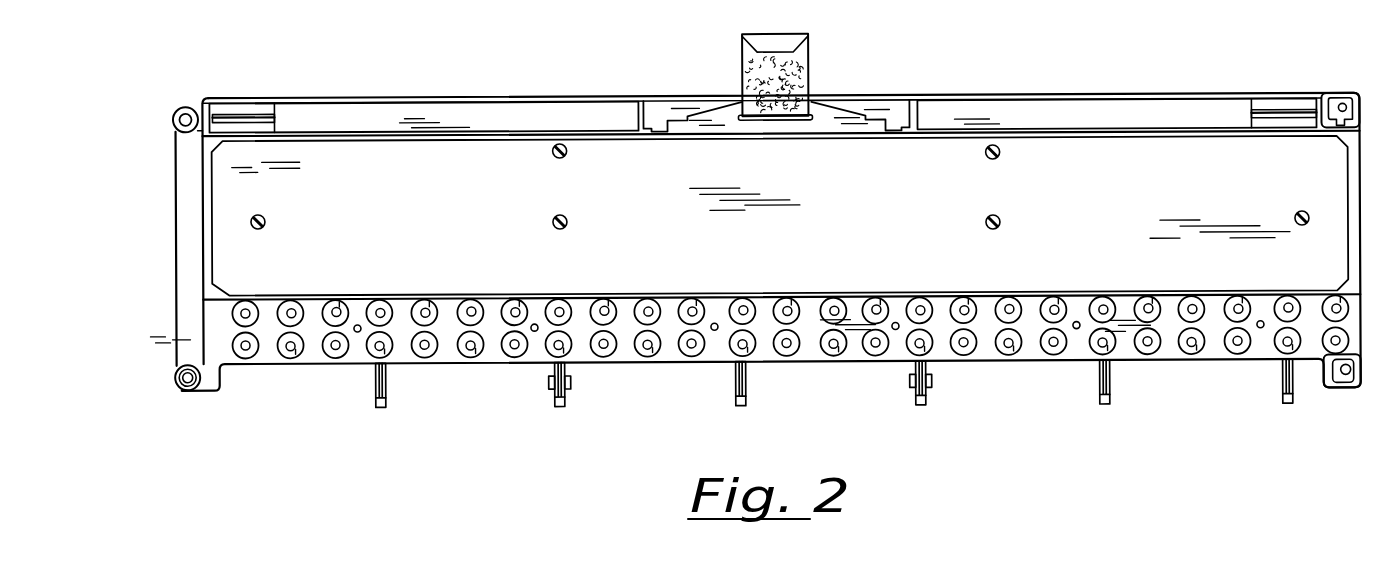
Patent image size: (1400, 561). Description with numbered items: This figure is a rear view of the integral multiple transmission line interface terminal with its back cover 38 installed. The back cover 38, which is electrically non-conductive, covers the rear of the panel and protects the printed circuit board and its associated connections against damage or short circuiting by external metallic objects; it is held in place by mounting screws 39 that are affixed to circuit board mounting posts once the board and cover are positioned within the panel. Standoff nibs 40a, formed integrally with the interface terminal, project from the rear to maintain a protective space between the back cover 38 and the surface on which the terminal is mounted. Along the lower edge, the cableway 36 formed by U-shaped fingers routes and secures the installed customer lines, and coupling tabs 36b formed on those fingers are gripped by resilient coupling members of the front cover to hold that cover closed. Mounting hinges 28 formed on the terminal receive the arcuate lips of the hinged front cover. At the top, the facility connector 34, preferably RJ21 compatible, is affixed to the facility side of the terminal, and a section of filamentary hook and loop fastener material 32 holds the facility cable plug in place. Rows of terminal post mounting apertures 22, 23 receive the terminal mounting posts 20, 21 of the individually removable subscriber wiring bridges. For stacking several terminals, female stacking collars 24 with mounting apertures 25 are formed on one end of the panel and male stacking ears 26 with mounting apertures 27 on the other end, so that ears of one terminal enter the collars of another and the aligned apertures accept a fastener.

The terminal mounting post 20 is at (246, 306).
The terminal mounting post 21 is at (250, 338).
The terminal post mounting aperture 22 is at (233, 311).
The terminal post mounting aperture 23 is at (247, 357).
The female stacking collar 24 is at (1355, 93).
The mounting aperture 25 is at (1340, 107).
The male stacking ear 26 is at (180, 162).
The mounting aperture 27 is at (186, 104).
The mounting hinge 28 is at (253, 114).
The filamentary hook and loop fastener material 32 is at (810, 53).
The facility connector 34 is at (721, 104).
The cableway 36 is at (387, 394).
The coupling tab 36b is at (544, 392).
The back cover 38 is at (433, 194).
The mounting screw 39 is at (257, 212).
The standoff nib 40a is at (1259, 331).